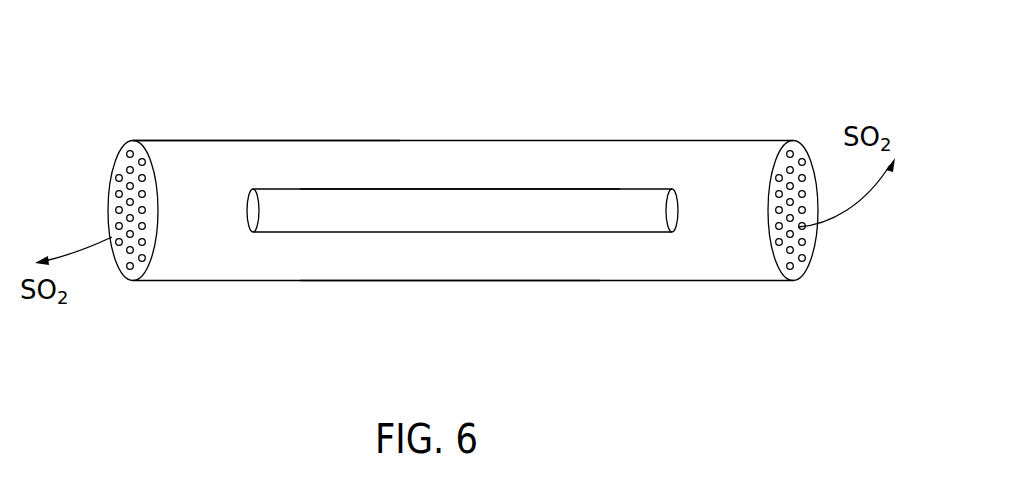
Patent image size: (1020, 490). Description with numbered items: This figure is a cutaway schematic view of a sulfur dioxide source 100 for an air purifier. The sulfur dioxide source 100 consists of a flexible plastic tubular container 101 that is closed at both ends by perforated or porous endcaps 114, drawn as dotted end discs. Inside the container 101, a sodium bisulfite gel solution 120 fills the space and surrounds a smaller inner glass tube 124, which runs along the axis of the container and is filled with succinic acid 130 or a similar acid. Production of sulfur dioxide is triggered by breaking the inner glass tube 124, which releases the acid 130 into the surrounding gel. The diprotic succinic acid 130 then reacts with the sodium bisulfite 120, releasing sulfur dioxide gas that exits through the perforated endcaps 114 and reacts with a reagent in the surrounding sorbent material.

The sulfur dioxide source 100 is at (331, 128).
The flexible plastic tubular container 101 is at (692, 140).
The perforated or porous endcaps 114 is at (110, 195).
The sodium bisulfite gel solution 120 is at (433, 258).
The glass tube 124 is at (468, 188).
The succinic acid 130 is at (593, 212).